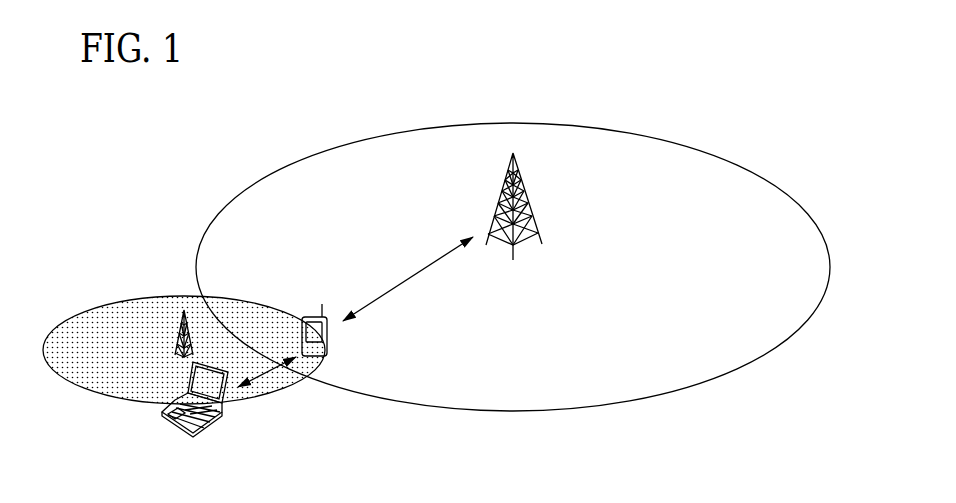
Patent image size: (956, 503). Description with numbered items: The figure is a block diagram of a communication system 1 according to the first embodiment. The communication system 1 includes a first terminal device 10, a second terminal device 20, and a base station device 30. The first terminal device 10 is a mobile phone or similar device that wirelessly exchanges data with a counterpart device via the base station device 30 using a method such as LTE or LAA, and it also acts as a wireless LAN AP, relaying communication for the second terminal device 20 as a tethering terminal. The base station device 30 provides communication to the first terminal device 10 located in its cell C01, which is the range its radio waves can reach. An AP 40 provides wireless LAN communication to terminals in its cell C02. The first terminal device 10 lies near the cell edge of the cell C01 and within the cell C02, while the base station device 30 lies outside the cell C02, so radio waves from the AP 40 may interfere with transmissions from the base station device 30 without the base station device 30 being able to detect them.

The communication system 1 is at (100, 171).
The first terminal device 10 is at (328, 338).
The second terminal device 20 is at (215, 420).
The base station device 30 is at (500, 247).
The AP 40 is at (176, 330).
The cell C01 is at (727, 376).
The cell C02 is at (108, 398).